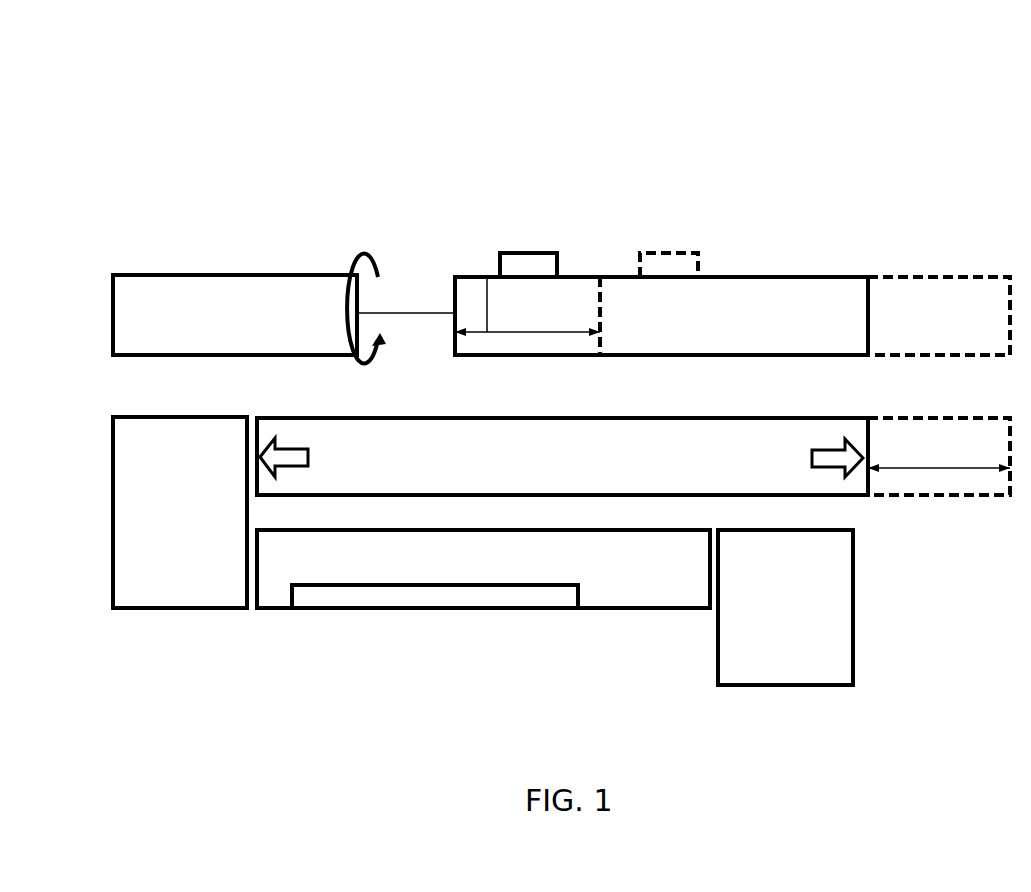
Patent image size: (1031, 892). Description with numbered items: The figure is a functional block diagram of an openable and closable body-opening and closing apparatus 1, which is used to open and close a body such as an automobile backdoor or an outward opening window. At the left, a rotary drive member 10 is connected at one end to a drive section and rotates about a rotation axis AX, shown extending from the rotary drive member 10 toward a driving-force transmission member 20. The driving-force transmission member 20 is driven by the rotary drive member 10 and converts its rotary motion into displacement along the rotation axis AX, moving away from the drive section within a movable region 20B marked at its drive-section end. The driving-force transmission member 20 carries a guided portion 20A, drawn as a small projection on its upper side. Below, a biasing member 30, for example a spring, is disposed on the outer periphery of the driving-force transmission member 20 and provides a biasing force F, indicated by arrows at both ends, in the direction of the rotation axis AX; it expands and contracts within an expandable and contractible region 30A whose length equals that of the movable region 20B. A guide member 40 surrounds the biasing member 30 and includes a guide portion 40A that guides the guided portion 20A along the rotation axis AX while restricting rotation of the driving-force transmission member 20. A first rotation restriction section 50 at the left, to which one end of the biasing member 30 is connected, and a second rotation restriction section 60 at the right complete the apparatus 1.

The openable and closable body-opening and closing apparatus 1 is at (950, 110).
The rotary drive member 10 is at (158, 275).
The rotation axis AX is at (400, 310).
The driving-force transmission member 20 is at (797, 277).
The guided portion 20A is at (536, 253).
The movable region 20B is at (487, 277).
The biasing member 30 is at (685, 418).
The expandable and contractible region 30A is at (927, 468).
The guide member 40 is at (620, 608).
The guide portion 40A is at (352, 608).
The first rotation restriction section 50 is at (175, 417).
The second rotation restriction section 60 is at (815, 687).
The biasing force F is at (290, 448).